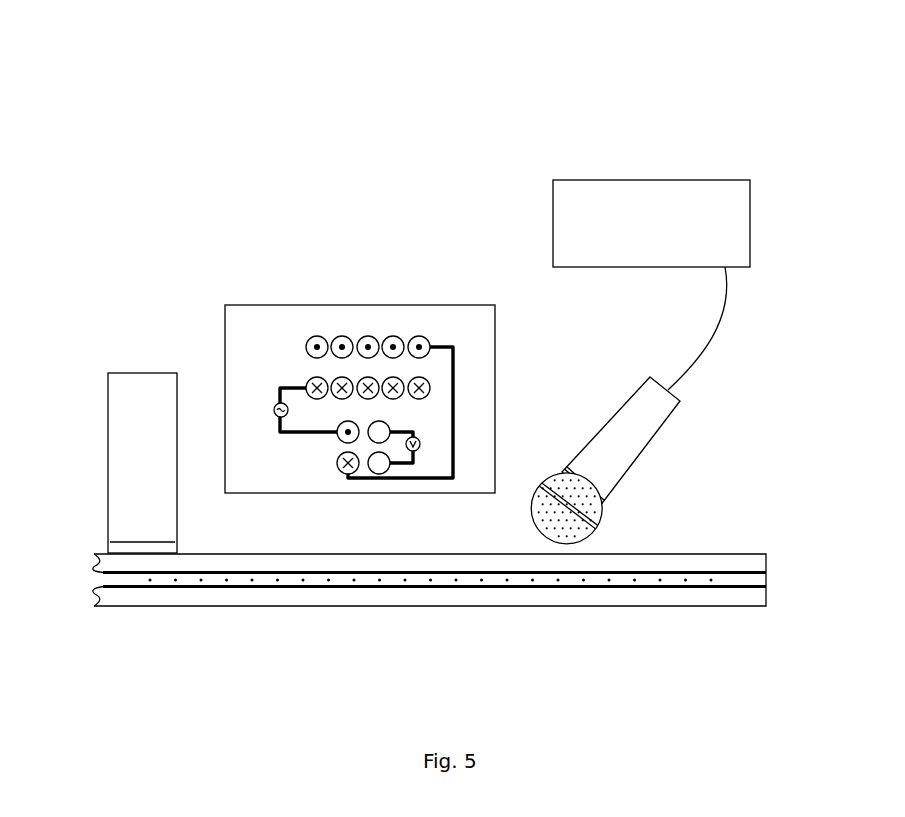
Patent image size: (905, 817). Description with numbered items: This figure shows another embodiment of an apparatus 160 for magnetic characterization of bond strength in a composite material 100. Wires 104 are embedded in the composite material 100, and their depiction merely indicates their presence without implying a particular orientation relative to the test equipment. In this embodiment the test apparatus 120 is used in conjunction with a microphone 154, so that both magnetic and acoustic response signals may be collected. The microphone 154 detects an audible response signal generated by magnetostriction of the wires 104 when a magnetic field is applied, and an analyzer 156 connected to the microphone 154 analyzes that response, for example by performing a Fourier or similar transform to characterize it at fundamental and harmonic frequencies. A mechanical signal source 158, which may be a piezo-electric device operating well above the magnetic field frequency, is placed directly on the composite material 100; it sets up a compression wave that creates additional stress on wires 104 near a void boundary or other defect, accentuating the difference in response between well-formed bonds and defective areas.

The apparatus for magnetic characterization of bond strength 160 is at (274, 152).
The analyzer 156 is at (618, 180).
The microphone 154 is at (640, 457).
The test apparatus 120 is at (387, 305).
The mechanical signal source 158 is at (107, 468).
The composite material 100 is at (425, 608).
The wires 104 is at (617, 583).